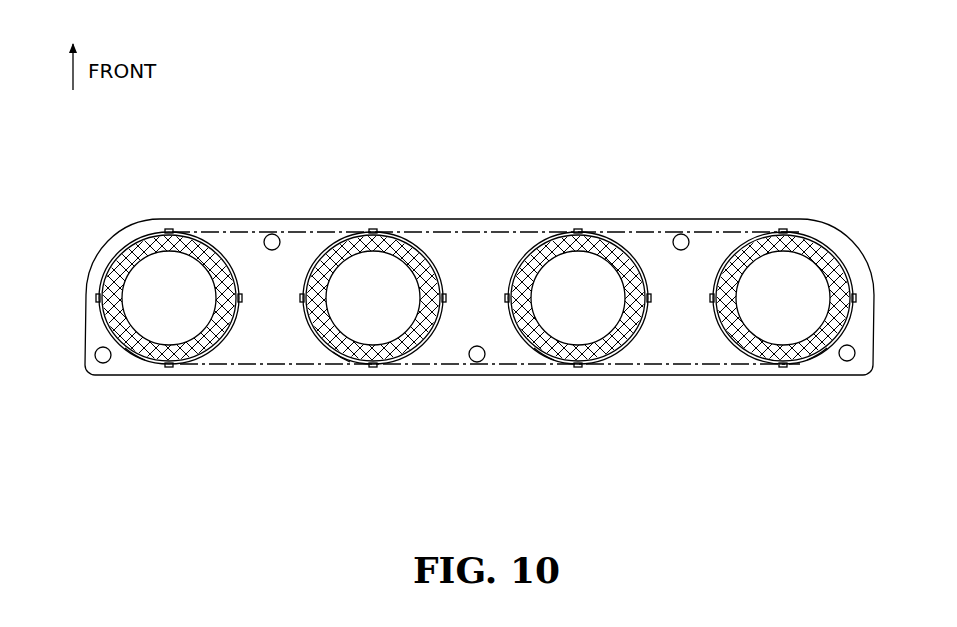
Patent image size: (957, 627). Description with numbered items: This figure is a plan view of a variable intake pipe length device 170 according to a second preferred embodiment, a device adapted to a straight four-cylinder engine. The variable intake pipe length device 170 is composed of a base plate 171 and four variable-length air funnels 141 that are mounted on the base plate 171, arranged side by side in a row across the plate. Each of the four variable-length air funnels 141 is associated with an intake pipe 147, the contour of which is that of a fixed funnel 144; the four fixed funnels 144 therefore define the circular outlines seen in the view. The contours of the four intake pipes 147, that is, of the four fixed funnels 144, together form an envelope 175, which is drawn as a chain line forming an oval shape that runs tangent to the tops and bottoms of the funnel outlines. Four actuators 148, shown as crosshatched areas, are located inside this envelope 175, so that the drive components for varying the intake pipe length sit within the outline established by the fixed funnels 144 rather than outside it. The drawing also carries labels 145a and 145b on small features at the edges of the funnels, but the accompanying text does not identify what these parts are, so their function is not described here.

The variable intake pipe length device 170 is at (288, 158).
The base plate 171 is at (480, 240).
The envelope 175 is at (453, 364).
The variable-length air funnel 141 is at (120, 221).
The intake pipe 147 is at (212, 238).
The fixed funnel 144 is at (205, 345).
The lower projection 145a is at (167, 368).
The side projection 145b is at (170, 226).
The actuator 148 is at (158, 362).